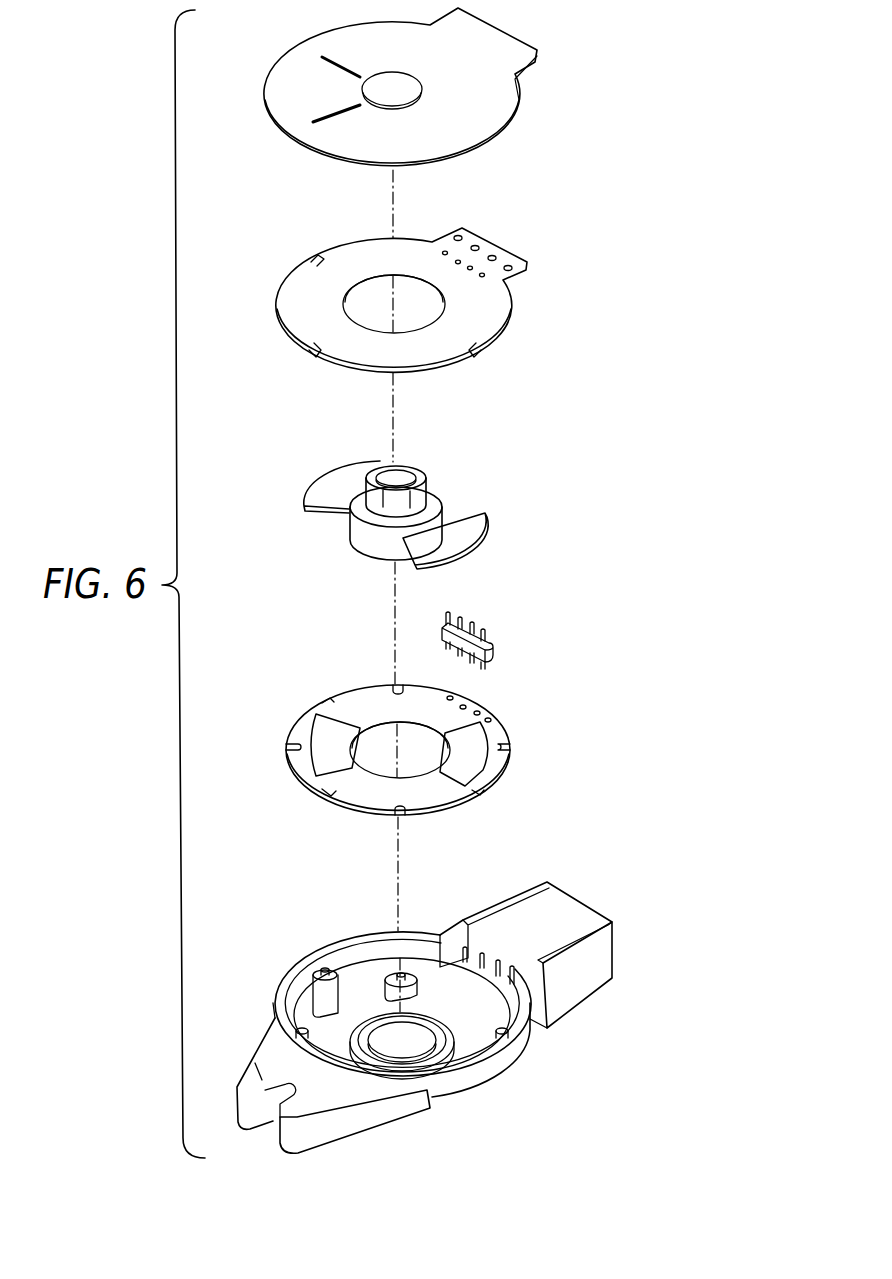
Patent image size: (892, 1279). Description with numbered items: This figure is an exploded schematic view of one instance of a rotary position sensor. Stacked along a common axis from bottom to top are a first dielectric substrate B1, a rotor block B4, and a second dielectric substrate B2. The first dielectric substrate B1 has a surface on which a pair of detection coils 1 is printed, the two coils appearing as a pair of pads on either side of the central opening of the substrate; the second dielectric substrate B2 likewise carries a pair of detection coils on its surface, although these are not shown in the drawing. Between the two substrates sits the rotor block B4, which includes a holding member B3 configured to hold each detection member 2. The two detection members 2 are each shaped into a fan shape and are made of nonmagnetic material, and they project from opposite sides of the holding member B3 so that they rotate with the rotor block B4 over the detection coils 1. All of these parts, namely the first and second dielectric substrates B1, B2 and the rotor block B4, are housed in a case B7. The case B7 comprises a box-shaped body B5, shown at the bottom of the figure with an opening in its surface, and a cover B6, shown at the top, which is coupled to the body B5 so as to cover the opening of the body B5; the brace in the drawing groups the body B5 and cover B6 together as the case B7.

The detection coil 1 is at (473, 755).
The detection member 2 is at (457, 537).
The first dielectric substrate B1 is at (345, 830).
The second dielectric substrate B2 is at (303, 308).
The holding member B3 is at (328, 558).
The rotor block B4 is at (497, 463).
The body B5 is at (510, 1072).
The cover B6 is at (698, 460).
The case B7 is at (747, 550).